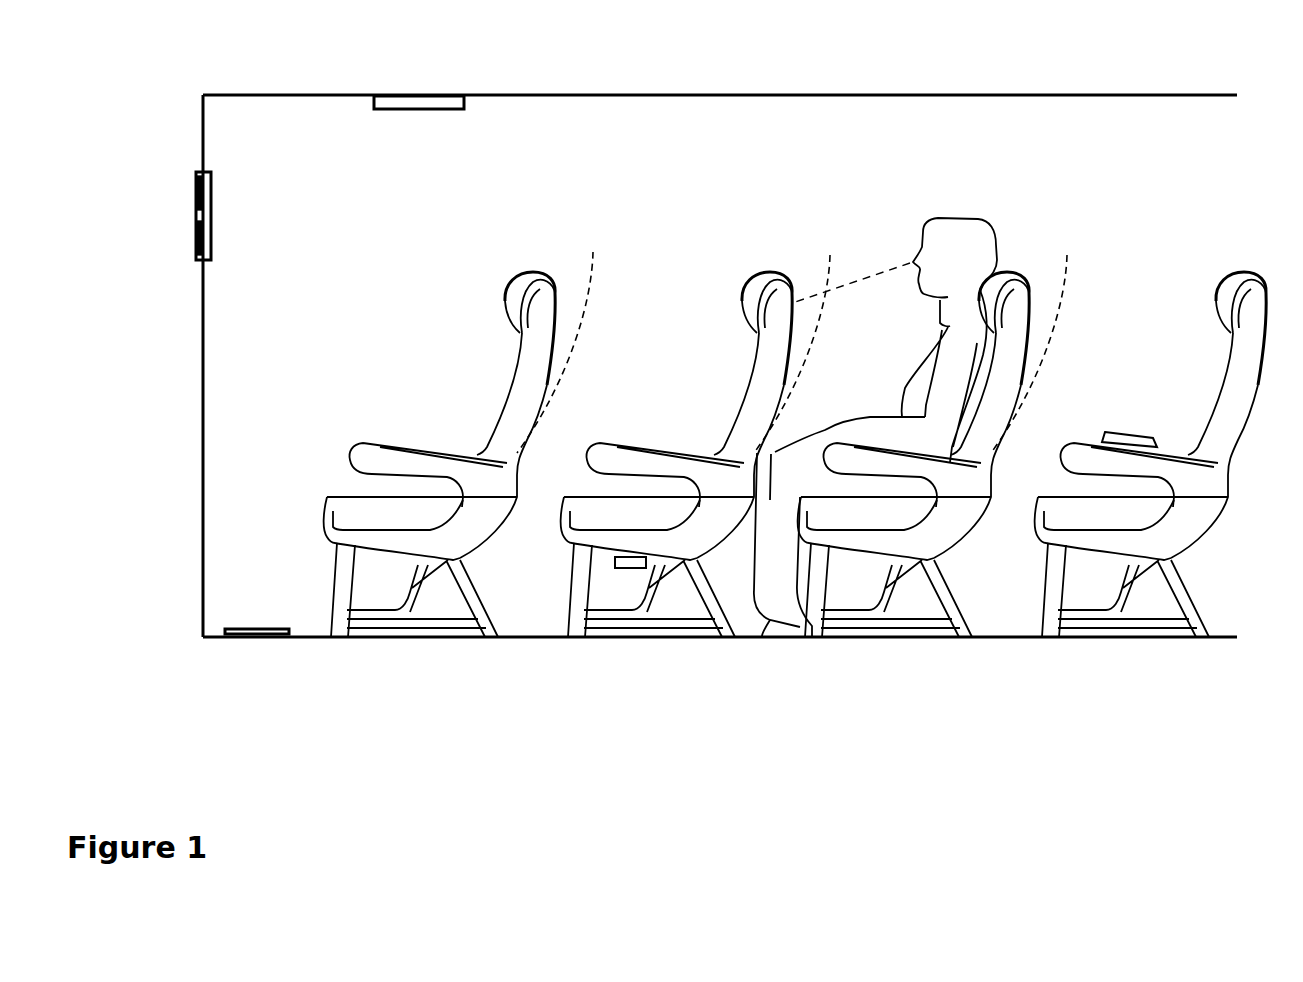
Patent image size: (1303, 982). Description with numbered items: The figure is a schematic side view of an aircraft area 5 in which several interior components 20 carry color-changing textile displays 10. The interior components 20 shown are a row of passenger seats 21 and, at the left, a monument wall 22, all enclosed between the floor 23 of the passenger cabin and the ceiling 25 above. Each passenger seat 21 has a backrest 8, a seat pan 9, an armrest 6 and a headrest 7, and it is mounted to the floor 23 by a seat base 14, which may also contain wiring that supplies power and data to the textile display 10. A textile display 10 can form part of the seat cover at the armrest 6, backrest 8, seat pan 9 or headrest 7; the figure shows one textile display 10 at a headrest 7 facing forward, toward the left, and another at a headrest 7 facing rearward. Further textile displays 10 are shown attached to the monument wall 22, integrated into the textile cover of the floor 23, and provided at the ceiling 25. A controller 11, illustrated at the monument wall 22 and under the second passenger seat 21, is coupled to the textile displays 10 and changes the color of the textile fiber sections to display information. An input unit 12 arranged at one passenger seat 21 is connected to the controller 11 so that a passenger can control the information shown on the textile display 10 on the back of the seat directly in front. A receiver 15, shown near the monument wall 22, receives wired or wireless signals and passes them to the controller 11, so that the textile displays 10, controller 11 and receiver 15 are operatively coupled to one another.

The aircraft area 5 is at (348, 41).
The armrest 6 is at (390, 445).
The headrest 7 is at (506, 306).
The backrest 8 is at (527, 384).
The seat pan 9 is at (327, 500).
The textile display 10 is at (418, 98).
The controller 11 is at (195, 172).
The input unit 12 is at (1133, 427).
The seat base 14 is at (1185, 593).
The receiver 15 is at (198, 252).
The interior component 20 is at (192, 608).
The passenger seat 21 is at (539, 255).
The monument wall 22 is at (207, 311).
The floor 23 is at (312, 640).
The ceiling 25 is at (667, 94).